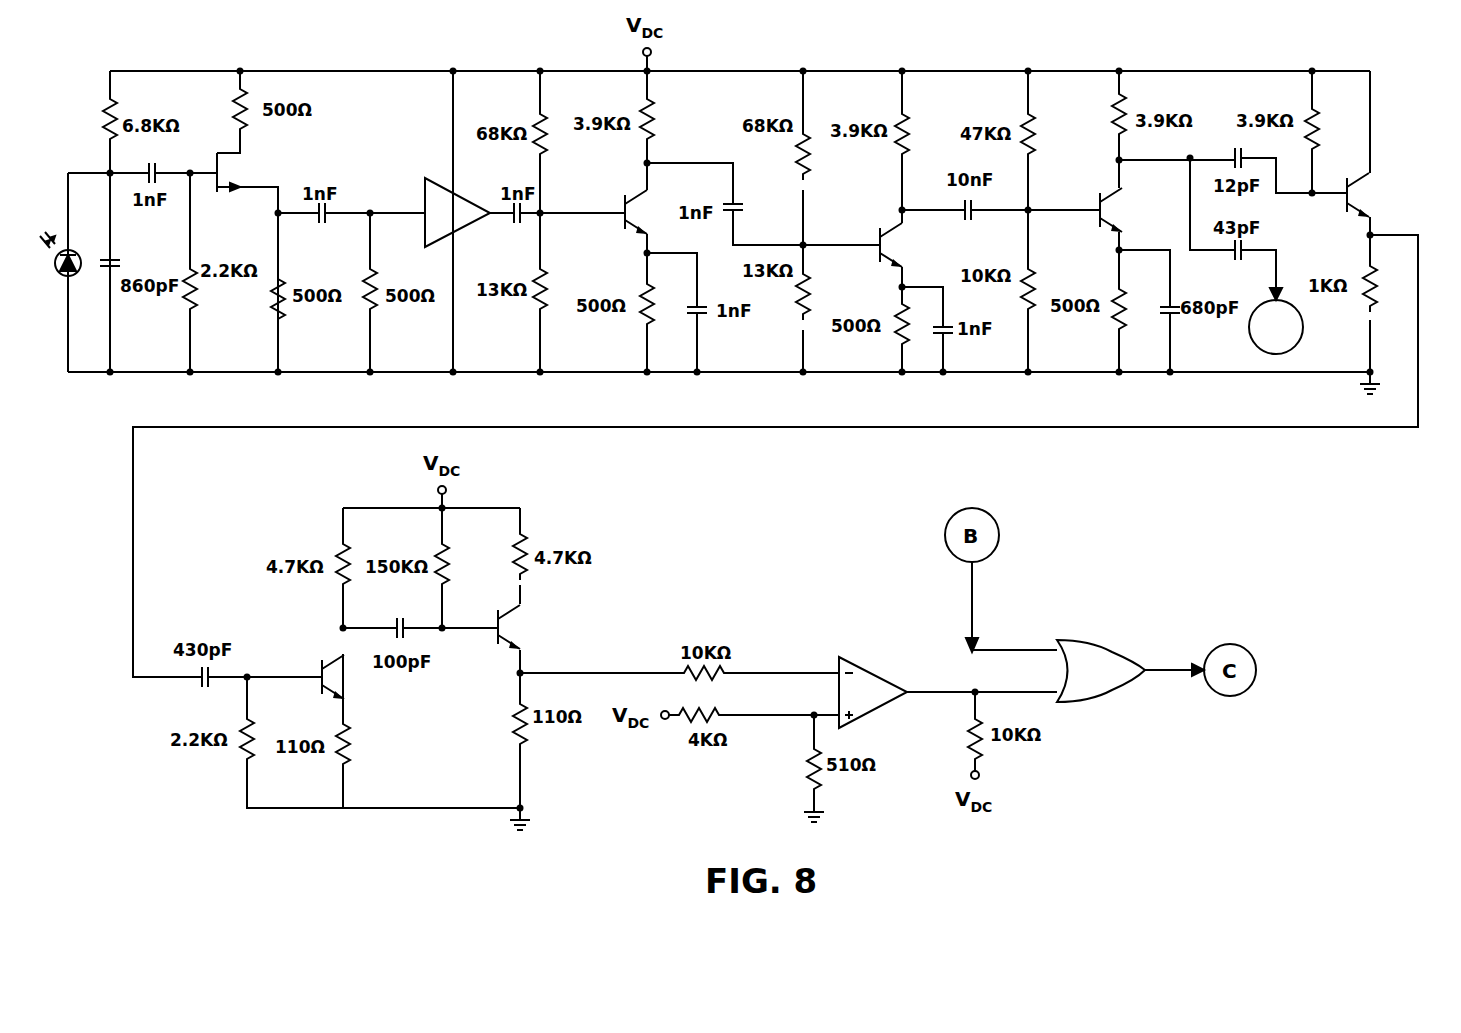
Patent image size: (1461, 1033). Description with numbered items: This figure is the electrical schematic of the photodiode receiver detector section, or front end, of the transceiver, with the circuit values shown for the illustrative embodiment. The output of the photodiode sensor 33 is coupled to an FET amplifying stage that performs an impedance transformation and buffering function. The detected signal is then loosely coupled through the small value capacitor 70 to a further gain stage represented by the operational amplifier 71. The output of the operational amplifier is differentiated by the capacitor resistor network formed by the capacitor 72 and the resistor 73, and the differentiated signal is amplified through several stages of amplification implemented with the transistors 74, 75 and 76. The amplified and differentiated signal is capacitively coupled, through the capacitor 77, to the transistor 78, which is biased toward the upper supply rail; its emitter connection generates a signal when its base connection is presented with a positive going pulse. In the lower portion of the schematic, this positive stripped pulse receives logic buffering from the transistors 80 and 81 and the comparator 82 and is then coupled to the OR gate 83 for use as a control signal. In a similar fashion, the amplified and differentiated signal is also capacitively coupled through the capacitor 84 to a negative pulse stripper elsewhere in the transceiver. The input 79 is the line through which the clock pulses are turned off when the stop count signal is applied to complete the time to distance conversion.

The photodiode sensor 33 is at (62, 278).
The small value capacitor 70 is at (328, 205).
The operational amplifier 71 is at (430, 180).
The capacitor 72 is at (512, 223).
The resistor 73 is at (546, 280).
The transistor 74 is at (645, 175).
The transistor 75 is at (890, 225).
The transistor 76 is at (1052, 210).
The capacitor 77 is at (1232, 148).
The transistor 78 is at (1324, 178).
The input 79 is at (1420, 358).
The transistor 80 is at (336, 655).
The transistor 81 is at (525, 594).
The comparator 82 is at (882, 670).
The OR gate 83 is at (1078, 640).
The capacitor 84 is at (1258, 250).